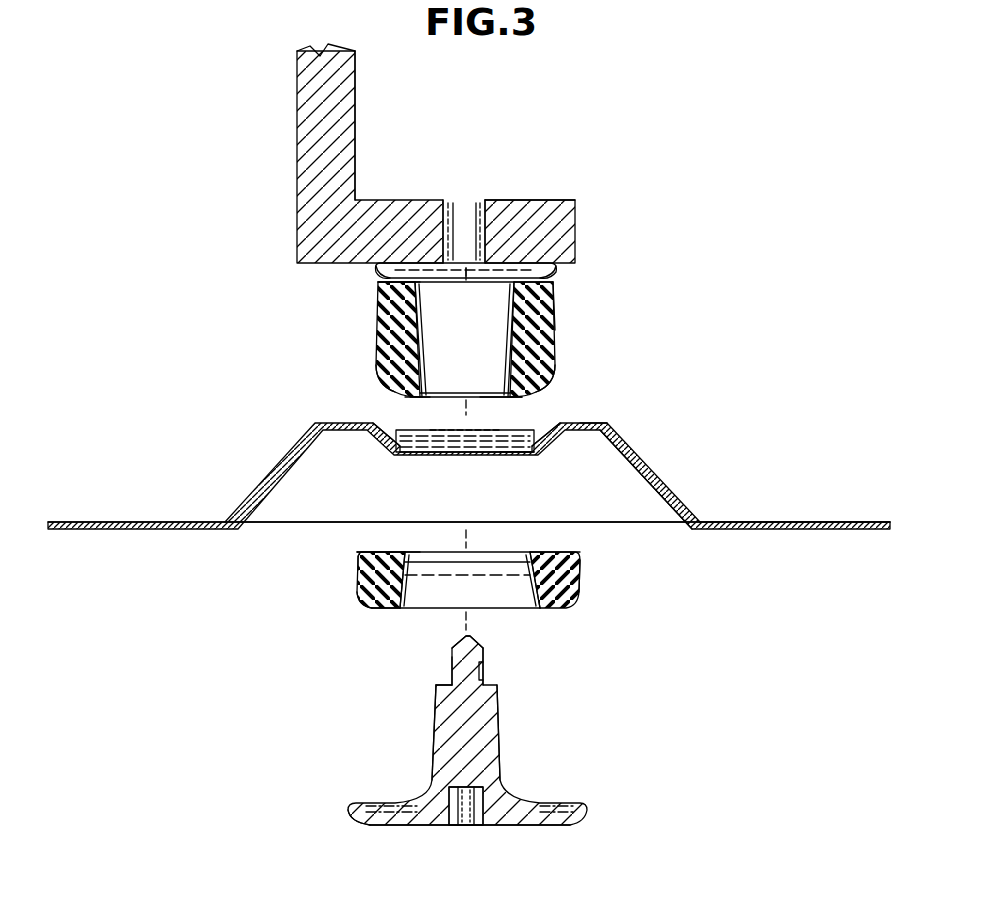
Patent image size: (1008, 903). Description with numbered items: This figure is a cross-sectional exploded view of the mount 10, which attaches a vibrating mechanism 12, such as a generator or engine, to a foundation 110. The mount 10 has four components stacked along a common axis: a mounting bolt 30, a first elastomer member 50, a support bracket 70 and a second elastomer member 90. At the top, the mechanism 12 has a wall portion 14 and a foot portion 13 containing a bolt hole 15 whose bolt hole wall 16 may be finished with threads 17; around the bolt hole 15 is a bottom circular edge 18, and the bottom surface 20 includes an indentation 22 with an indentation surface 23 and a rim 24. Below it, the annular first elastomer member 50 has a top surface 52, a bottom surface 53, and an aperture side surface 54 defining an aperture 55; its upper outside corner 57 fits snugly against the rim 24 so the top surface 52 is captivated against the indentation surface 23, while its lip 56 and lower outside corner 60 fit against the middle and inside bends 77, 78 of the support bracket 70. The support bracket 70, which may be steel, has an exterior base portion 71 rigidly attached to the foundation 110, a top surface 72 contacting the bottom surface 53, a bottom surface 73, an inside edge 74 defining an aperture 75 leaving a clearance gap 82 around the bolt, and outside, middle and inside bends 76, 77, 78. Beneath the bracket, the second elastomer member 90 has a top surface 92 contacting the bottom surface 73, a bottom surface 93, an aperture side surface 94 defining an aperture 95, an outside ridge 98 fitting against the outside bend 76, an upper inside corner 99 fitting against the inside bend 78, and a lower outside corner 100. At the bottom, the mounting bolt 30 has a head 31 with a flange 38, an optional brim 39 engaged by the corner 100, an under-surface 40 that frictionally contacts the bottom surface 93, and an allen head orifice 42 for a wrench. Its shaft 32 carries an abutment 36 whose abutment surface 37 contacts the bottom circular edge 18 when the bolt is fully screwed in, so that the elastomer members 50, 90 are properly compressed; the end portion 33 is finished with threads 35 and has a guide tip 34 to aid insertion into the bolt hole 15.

The mount 10 is at (720, 236).
The mechanism 12 is at (406, 153).
The foot portion 13 is at (530, 169).
The wall portion 14 is at (379, 125).
The bolt hole 15 is at (464, 191).
The bolt hole wall 16 is at (492, 208).
The threads 17 is at (447, 226).
The bottom circular edge 18 is at (473, 311).
The bottom surface 20 is at (489, 290).
The indentation 22 is at (569, 312).
The indentation surface 23 is at (349, 276).
The indentation rim 24 is at (575, 279).
The mounting bolt 30 is at (467, 756).
The head 31 is at (470, 849).
The shaft 32 is at (490, 732).
The end portion 33 is at (519, 666).
The guide tip 34 is at (500, 634).
The threads 35 is at (516, 685).
The abutment 36 is at (440, 684).
The abutment surface 37 is at (413, 681).
The flange 38 is at (331, 827).
The brim 39 is at (380, 779).
The under-surface 40 is at (481, 779).
The allen head orifice 42 is at (465, 831).
The first elastomer member 50 is at (498, 339).
The top surface 52 is at (438, 282).
The bottom surface 53 is at (465, 380).
The aperture side surface 54 is at (571, 377).
The aperture 55 is at (497, 400).
The lip 56 is at (365, 381).
The upper outside corner 57 is at (368, 301).
The lower outside corner 60 is at (388, 408).
The support bracket 70 is at (469, 476).
The exterior base portion 71 is at (795, 498).
The top surface 72 is at (614, 404).
The bottom surface 73 is at (646, 479).
The inside edge 74 is at (462, 466).
The aperture 75 is at (465, 469).
The outside bend 76 is at (361, 457).
The middle bend 77 is at (561, 457).
The inside bend 78 is at (523, 477).
The clearance gap 82 is at (465, 466).
The second elastomer member 90 is at (431, 582).
The top surface 92 is at (518, 552).
The bottom surface 93 is at (371, 638).
The aperture side surface 94 is at (612, 577).
The aperture 95 is at (463, 601).
The outside ridge 98 is at (315, 571).
The upper inside corner 99 is at (380, 553).
The lower outside corner 100 is at (331, 620).
The foundation 110 is at (451, 544).